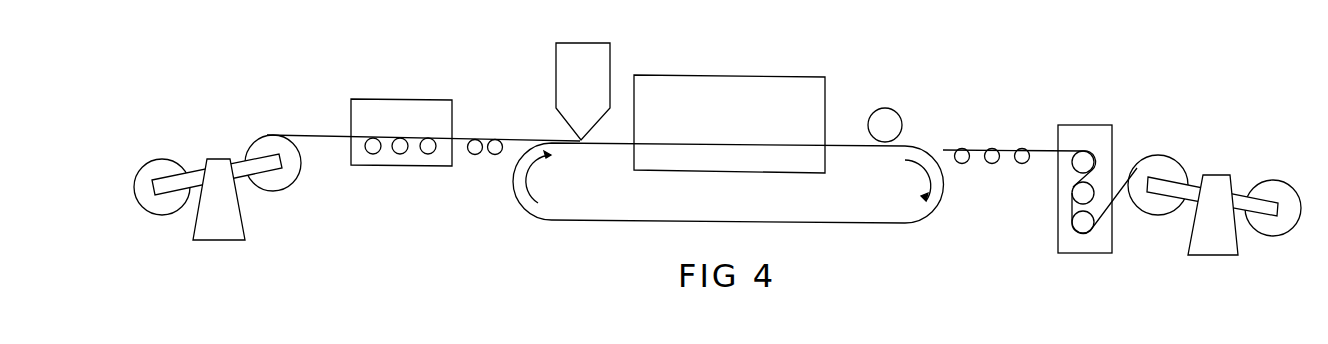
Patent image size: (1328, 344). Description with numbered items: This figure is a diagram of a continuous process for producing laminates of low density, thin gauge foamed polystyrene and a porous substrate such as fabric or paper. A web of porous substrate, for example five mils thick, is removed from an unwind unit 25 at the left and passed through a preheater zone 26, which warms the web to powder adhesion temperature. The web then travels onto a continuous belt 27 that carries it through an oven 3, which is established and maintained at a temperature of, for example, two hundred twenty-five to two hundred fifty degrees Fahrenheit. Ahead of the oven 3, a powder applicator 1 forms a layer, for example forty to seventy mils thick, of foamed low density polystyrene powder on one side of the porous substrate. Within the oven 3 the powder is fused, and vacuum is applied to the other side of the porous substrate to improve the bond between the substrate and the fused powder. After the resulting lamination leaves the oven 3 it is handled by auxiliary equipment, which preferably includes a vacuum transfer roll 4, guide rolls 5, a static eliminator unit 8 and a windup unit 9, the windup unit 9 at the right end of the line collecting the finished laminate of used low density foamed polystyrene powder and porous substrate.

The unwind unit 25 is at (225, 158).
The preheater zone 26 is at (427, 100).
The powder applicator 1 is at (610, 62).
The continuous belt 27 is at (642, 220).
The oven 3 is at (750, 77).
The vacuum transfer roll 4 is at (897, 112).
The guide rolls 5 is at (1018, 162).
The static eliminator unit 8 is at (1112, 135).
The windup unit 9 is at (1220, 175).